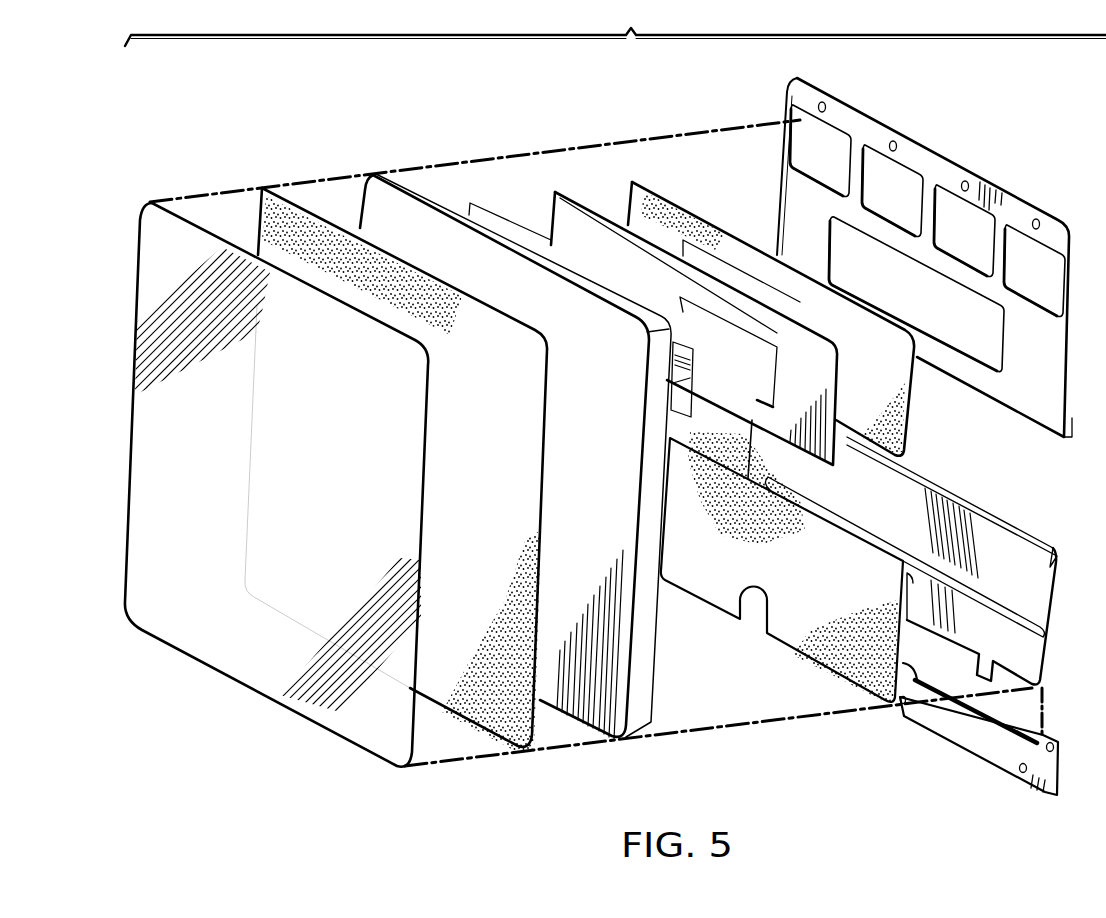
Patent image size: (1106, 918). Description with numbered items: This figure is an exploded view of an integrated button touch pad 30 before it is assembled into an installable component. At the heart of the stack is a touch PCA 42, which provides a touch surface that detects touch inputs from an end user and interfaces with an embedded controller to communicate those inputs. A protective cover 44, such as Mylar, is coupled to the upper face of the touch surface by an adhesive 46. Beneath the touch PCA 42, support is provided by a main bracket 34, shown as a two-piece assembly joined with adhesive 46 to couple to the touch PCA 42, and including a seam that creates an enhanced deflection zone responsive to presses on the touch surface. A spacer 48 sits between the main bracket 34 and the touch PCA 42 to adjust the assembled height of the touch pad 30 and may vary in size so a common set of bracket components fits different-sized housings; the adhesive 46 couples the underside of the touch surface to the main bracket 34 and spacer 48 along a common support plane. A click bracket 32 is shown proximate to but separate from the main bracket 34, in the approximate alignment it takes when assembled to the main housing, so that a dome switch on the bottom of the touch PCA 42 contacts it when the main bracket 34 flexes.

The integrated button touch pad 30 is at (615, 383).
The click bracket 32 is at (982, 743).
The main bracket 34 is at (934, 164).
The touch PCA 42 is at (373, 197).
The protective cover 44 is at (260, 669).
The adhesive 46 is at (500, 787).
The spacer 48 is at (563, 213).